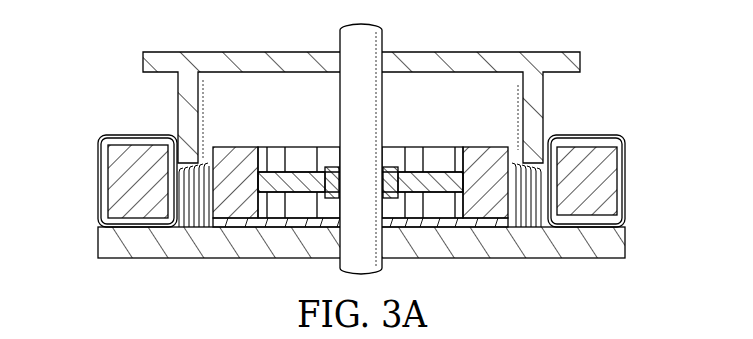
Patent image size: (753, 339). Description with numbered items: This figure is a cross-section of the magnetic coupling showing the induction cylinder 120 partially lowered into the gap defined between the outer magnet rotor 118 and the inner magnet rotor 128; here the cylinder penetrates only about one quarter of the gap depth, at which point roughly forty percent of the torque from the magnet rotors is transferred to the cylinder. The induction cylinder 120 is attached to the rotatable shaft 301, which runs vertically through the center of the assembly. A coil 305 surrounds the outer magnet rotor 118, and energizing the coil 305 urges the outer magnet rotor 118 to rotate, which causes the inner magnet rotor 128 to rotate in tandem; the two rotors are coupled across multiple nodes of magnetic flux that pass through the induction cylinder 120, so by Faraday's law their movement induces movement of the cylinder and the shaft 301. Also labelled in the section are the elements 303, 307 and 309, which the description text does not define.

The outer magnet rotor 118 is at (114, 165).
The induction cylinder 120 is at (545, 92).
The inner magnet rotor 128 is at (243, 145).
The rotatable shaft 301 is at (383, 42).
The bearing block 303 is at (330, 168).
The coil 305 is at (99, 190).
The base plate 307 is at (568, 245).
The coil assembly 309 is at (424, 172).